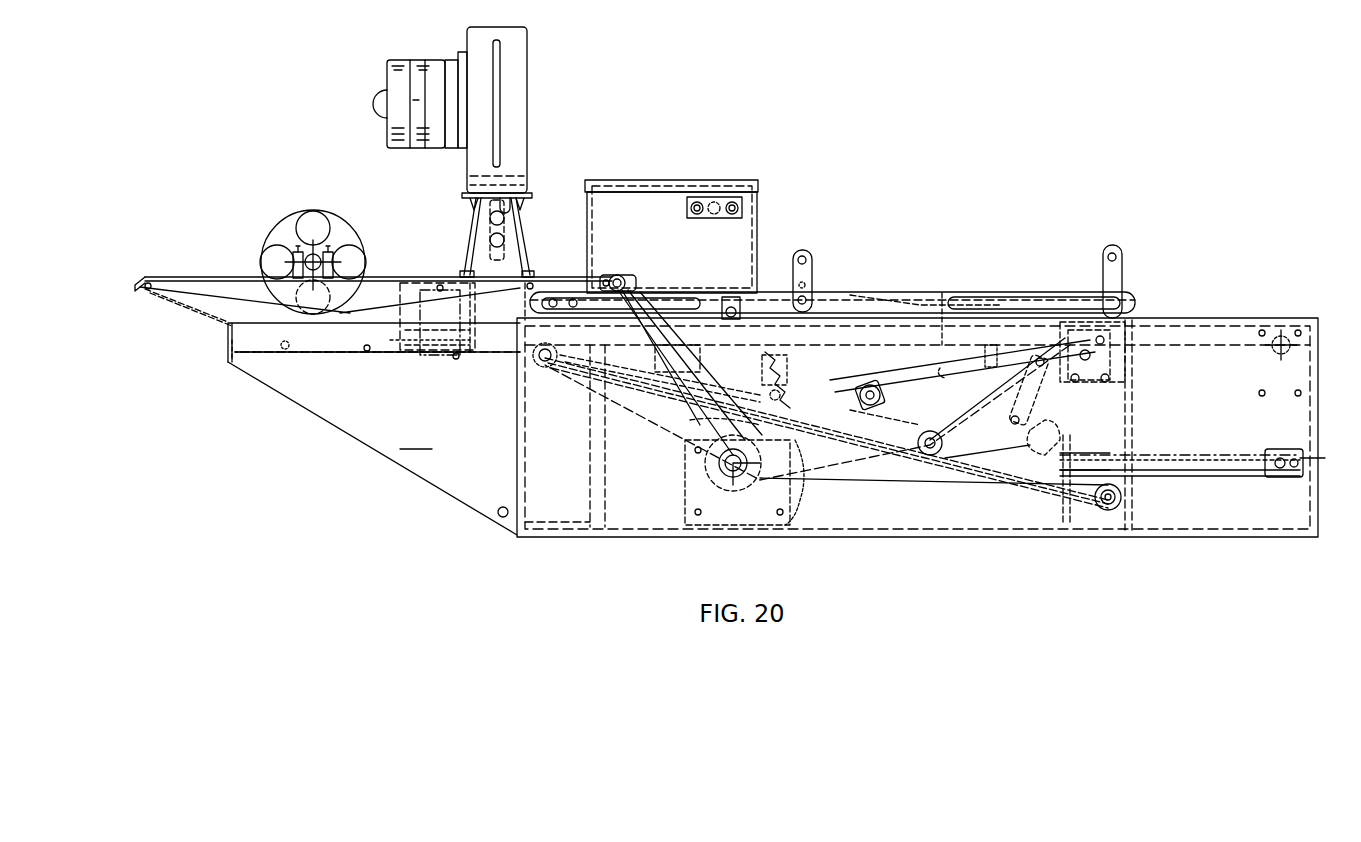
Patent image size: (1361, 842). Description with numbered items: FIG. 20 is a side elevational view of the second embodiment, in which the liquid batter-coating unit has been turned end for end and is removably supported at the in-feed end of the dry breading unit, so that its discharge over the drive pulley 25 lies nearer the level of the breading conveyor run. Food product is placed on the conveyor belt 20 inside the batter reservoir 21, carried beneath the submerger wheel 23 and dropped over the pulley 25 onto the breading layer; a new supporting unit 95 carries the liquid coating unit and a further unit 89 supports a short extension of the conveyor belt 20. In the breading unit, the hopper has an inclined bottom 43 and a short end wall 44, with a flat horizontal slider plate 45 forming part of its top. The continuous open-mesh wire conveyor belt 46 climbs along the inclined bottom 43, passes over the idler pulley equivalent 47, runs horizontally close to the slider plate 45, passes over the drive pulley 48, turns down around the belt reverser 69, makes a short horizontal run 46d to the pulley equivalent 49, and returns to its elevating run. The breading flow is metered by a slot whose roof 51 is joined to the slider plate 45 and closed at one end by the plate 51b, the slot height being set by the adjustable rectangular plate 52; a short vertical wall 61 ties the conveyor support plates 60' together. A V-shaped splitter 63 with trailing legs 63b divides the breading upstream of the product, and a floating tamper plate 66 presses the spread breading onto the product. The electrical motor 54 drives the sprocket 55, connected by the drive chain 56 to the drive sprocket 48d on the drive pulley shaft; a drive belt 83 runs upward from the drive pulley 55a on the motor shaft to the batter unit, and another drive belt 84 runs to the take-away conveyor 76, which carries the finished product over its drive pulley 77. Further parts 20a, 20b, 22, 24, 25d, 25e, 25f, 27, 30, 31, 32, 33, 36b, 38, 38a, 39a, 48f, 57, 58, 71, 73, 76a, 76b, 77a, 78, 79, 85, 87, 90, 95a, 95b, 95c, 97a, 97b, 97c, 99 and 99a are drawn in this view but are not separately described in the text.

The conveyor belt 20 is at (376, 310).
The film strip portion 20a is at (645, 290).
The film strip portion 20b is at (665, 294).
The batter reservoir 21 is at (373, 301).
The plate end 22 is at (140, 286).
The submerger wheel 23 is at (320, 212).
The camera support 24 is at (535, 262).
The drive pulley 25 is at (625, 280).
The roller shaft 25d is at (620, 278).
The terminal 25e is at (712, 204).
The roller flange 25f is at (612, 278).
The plate member 27 is at (410, 352).
The pin 30 is at (362, 336).
The pin 31 is at (293, 336).
The guide 32 is at (416, 277).
The reel spindle bracket 33 is at (337, 248).
The housing 36b is at (438, 330).
The camera lens 38 is at (448, 148).
The camera support leg 38a is at (516, 235).
The support column 39a is at (478, 222).
The inclined bottom 43 is at (905, 472).
The short end wall 44 is at (515, 372).
The slider plate 45 is at (875, 366).
The conveyor belt 46 is at (944, 340).
The short horizontal run 46d is at (1068, 522).
The idler pulley equivalent 47 is at (542, 368).
The drive pulley 48 is at (1128, 360).
The drive sprocket 48d is at (1098, 310).
The shaft 48f is at (1262, 328).
The idler pulley equivalent 49 is at (1124, 498).
The roof 51 is at (648, 370).
The plate 51b is at (796, 380).
The rectangular plate 52 is at (773, 377).
The electrical motor 54 is at (685, 503).
The drive sprocket 55 is at (730, 468).
The drive pulley 55a is at (748, 484).
The drive chain 56 is at (975, 430).
The roller 57 is at (882, 396).
The link 58 is at (885, 422).
The conveyor support plate 60' is at (1034, 276).
The short vertical wall 61 is at (992, 362).
The splitter 63 is at (582, 300).
The trailing legs 63b is at (716, 308).
The tamper plate 66 is at (912, 298).
The belt reverser 69 is at (1066, 420).
The lever 71 is at (1030, 460).
The link 73 is at (1025, 405).
The take-away conveyor 76 is at (1190, 456).
The rod portion 76a is at (1130, 458).
The rod portion 76b is at (1205, 478).
The drive pulley 77 is at (1305, 478).
The clamp screw 77a is at (1320, 458).
The pivot 78 is at (1078, 458).
The spring 79 is at (1225, 460).
The drive belt 83 is at (690, 423).
The drive belt 84 is at (800, 482).
The bracket 85 is at (808, 282).
The lower plate 87 is at (225, 345).
The supporting unit 89 is at (655, 292).
The film path 90 is at (666, 357).
The supporting unit 95 is at (355, 443).
The brace surface 95a is at (415, 439).
The brace portion 95b is at (402, 352).
The brace portion 95c is at (517, 340).
The fastener 97a is at (498, 515).
The fastener 97b is at (455, 360).
The fastener 97c is at (236, 368).
The control box 99 is at (758, 242).
The terminal block 99a is at (742, 212).